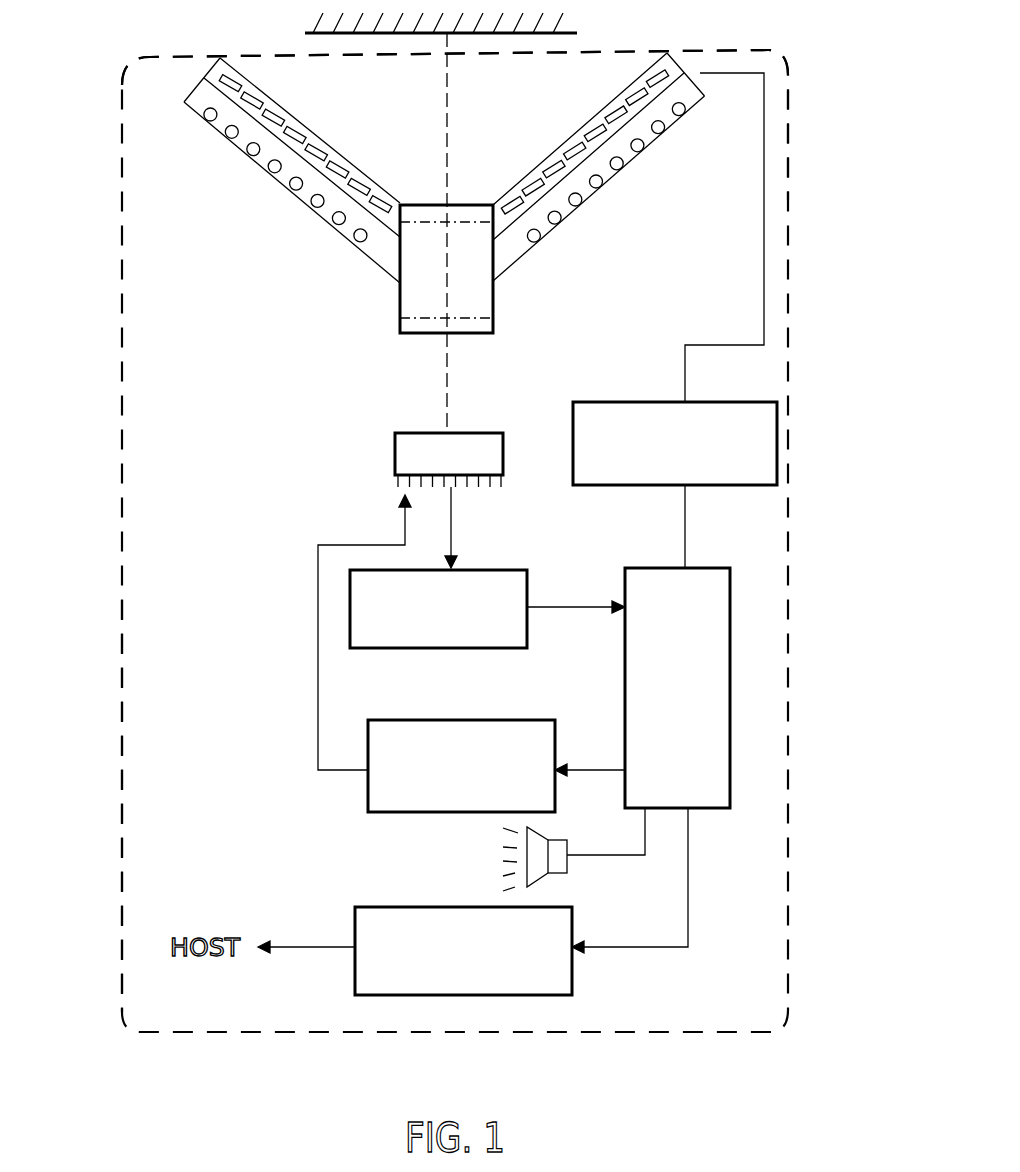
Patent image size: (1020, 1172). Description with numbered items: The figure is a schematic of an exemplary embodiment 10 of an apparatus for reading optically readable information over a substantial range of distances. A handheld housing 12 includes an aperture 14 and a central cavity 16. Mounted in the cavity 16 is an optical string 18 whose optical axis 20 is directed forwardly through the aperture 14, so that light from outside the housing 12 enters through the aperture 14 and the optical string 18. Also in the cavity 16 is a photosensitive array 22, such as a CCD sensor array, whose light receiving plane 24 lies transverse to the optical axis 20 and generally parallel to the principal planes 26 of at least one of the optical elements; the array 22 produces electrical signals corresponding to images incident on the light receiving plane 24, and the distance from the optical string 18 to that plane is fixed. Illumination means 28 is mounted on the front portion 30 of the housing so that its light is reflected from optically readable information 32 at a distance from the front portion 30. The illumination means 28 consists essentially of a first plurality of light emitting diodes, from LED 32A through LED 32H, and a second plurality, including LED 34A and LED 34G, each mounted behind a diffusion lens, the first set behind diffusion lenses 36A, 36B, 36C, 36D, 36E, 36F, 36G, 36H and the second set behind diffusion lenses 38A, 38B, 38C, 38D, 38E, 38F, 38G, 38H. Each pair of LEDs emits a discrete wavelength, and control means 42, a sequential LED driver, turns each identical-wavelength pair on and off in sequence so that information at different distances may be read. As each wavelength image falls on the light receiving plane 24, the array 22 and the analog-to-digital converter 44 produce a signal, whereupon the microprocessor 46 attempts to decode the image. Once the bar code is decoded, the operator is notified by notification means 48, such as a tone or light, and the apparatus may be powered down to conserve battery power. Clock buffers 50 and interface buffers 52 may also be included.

The exemplary embodiment 10 is at (648, 47).
The housing 12 is at (155, 593).
The aperture 14 is at (412, 203).
The central cavity 16 is at (227, 717).
The optical string 18 is at (473, 297).
The optical axis 20 is at (445, 365).
The photosensitive array 22 is at (483, 447).
The light receiving plane 24 is at (417, 432).
The principal planes 26 is at (470, 203).
The illumination means 28 is at (262, 90).
The front portion 30 is at (385, 272).
The optically readable information 32 is at (500, 33).
The light emitting diode 32A is at (203, 118).
The light emitting diode 32H is at (353, 243).
The light emitting diode 34A is at (686, 112).
The light emitting diode 34G is at (540, 236).
The diffusion lens 36A is at (222, 82).
The diffusion lens 36B is at (247, 103).
The diffusion lens 36C is at (268, 122).
The diffusion lens 36D is at (290, 140).
The diffusion lens 36E is at (316, 148).
The diffusion lens 36F is at (340, 166).
The diffusion lens 36G is at (352, 192).
The diffusion lens 36H is at (374, 210).
The diffusion lens 38A is at (665, 80).
The diffusion lens 38B is at (633, 95).
The diffusion lens 38C is at (622, 118).
The diffusion lens 38D is at (602, 137).
The diffusion lens 38E is at (582, 155).
The diffusion lens 38F is at (562, 172).
The diffusion lens 38G is at (535, 182).
The diffusion lens 38H is at (520, 208).
The control means 42 is at (723, 478).
The analog-to-digital converter 44 is at (490, 582).
The microprocessor 46 is at (720, 745).
The notification means 48 is at (548, 878).
The clock buffers 50 is at (385, 760).
The interface buffers 52 is at (555, 982).